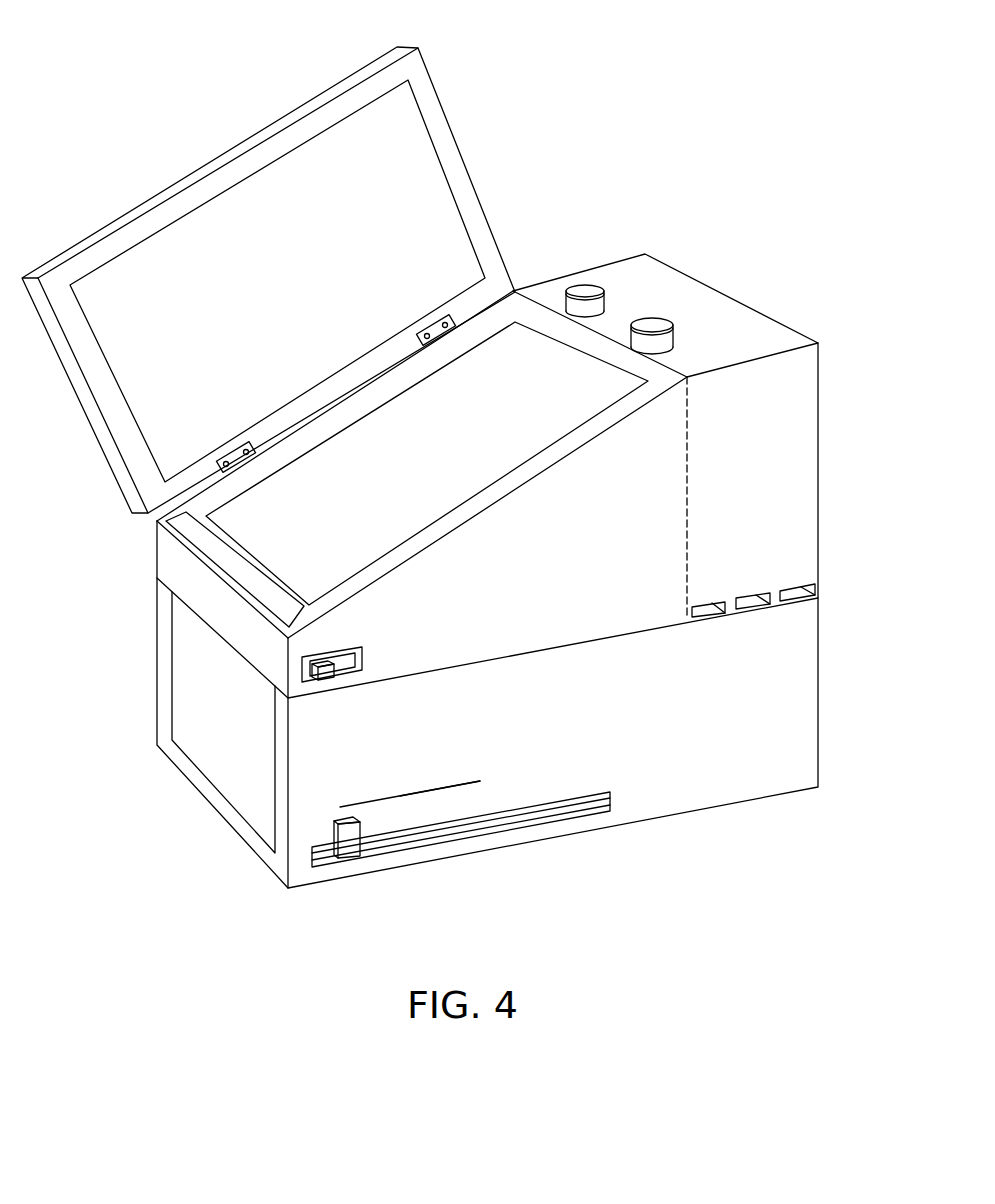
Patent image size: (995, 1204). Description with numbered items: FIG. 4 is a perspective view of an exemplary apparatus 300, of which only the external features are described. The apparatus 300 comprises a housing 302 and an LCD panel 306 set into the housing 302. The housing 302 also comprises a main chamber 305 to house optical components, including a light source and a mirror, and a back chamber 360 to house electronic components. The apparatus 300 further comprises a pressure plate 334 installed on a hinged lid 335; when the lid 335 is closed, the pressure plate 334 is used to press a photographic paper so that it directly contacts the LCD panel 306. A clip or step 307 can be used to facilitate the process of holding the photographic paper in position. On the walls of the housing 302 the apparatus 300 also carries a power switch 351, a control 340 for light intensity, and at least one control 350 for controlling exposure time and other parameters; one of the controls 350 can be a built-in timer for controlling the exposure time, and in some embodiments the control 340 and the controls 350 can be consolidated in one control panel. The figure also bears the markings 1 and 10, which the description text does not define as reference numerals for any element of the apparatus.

The apparatus 300 is at (158, 106).
The housing 302 is at (688, 819).
The main chamber 305 is at (497, 640).
The LCD panel 306 is at (300, 564).
The clip or step 307 is at (204, 539).
The pressure plate 334 is at (422, 222).
The hinged lid 335 is at (448, 143).
The control for light intensity 340 is at (348, 851).
The control for exposure time and other parameters 350 is at (598, 290).
The power switch 351 is at (332, 678).
The back chamber 360 is at (765, 520).
The device 1 is at (480, 781).
The guide line 10 is at (400, 796).